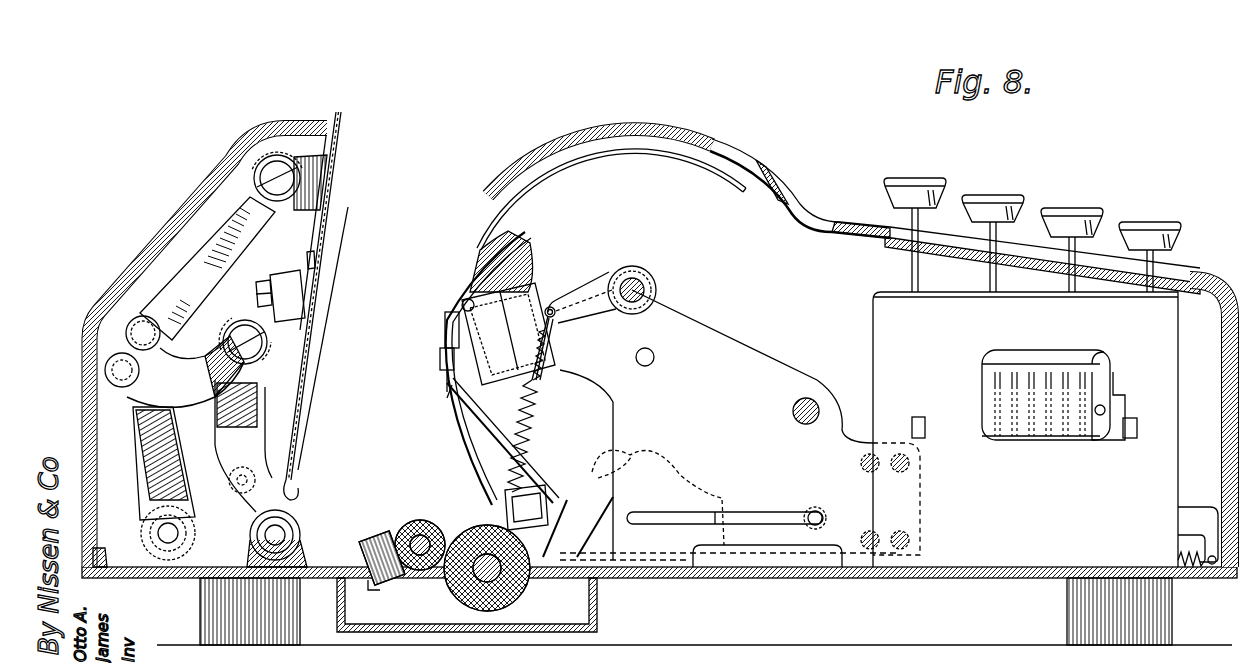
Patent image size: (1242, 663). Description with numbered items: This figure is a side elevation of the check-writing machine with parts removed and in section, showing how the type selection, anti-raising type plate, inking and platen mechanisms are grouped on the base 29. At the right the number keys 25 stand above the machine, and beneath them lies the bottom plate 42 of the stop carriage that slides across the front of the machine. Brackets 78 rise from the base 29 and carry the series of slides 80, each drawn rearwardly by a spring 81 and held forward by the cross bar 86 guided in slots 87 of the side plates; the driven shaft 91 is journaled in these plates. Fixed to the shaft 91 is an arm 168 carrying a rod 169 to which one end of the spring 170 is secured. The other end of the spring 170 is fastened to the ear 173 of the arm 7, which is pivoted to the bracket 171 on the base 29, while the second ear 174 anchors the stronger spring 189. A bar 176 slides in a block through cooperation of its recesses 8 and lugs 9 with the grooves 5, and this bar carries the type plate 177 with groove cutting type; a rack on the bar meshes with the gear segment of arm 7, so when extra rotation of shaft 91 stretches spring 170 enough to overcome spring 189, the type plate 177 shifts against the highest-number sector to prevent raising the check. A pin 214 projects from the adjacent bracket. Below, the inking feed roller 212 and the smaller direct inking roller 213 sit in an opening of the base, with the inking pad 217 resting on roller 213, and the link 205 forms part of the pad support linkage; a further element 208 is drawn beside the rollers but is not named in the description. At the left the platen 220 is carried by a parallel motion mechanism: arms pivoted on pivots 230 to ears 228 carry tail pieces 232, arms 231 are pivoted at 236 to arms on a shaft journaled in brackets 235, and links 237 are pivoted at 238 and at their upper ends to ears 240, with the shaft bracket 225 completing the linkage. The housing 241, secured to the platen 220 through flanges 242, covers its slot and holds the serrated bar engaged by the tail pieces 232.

The grooves 5 is at (546, 360).
The arm 7 is at (478, 428).
The recesses 8 is at (1222, 447).
The lugs 9 is at (525, 300).
The number keys 25 is at (1073, 206).
The base 29 is at (923, 576).
The bottom plate 42 is at (1052, 442).
The brackets 78 is at (763, 353).
The slides 80 is at (1182, 512).
The spring 81 is at (1199, 568).
The cross bar 86 is at (815, 530).
The slots 87 is at (775, 526).
The shaft 91 is at (645, 287).
The arm 168 is at (586, 292).
The rod 169 is at (553, 337).
The spring 170 is at (530, 452).
The base tray 171 is at (582, 571).
The ear 173 is at (530, 492).
The ear 174 is at (522, 480).
The bar 176 is at (440, 352).
The type plate 177 is at (445, 322).
The spring 189 is at (526, 392).
The link 205 is at (593, 484).
The roller 208 is at (372, 550).
The feed roller 212 is at (462, 586).
The direct inking roller 213 is at (420, 522).
The pin 214 is at (462, 303).
The inking pad 217 is at (376, 583).
The platen 220 is at (292, 453).
The bracket 225 is at (297, 542).
The ears 228 is at (224, 343).
The pivots 230 is at (268, 342).
The arms 231 is at (212, 403).
The tail pieces 232 is at (185, 299).
The brackets 235 is at (189, 572).
The pivot 236 is at (122, 388).
The link 237 is at (215, 229).
The pivot 238 is at (128, 326).
The ears 240 is at (300, 172).
The housing 241 is at (290, 285).
The flanges 242 is at (309, 260).